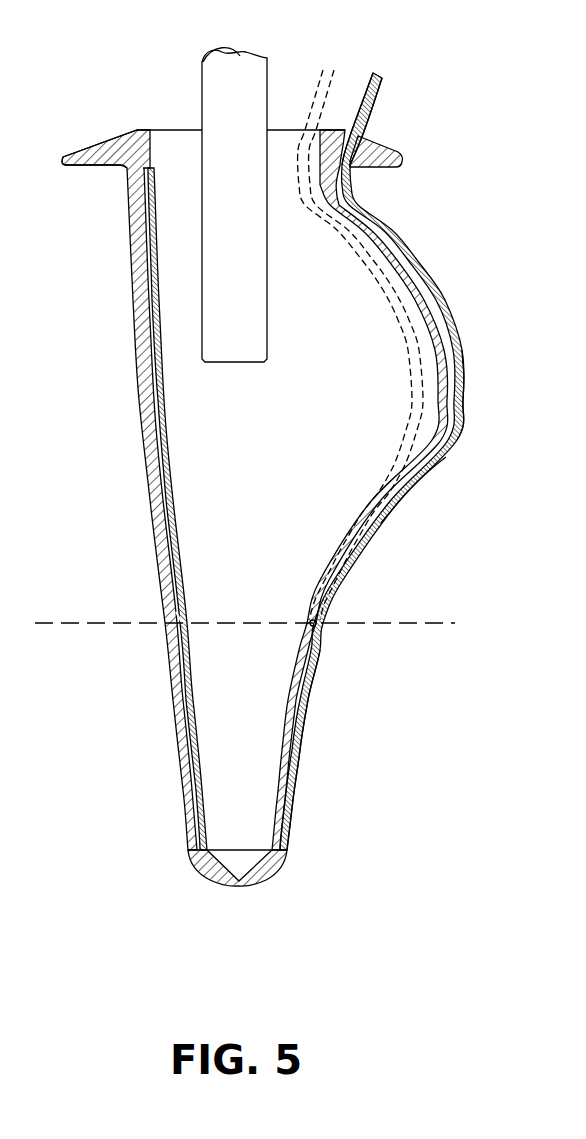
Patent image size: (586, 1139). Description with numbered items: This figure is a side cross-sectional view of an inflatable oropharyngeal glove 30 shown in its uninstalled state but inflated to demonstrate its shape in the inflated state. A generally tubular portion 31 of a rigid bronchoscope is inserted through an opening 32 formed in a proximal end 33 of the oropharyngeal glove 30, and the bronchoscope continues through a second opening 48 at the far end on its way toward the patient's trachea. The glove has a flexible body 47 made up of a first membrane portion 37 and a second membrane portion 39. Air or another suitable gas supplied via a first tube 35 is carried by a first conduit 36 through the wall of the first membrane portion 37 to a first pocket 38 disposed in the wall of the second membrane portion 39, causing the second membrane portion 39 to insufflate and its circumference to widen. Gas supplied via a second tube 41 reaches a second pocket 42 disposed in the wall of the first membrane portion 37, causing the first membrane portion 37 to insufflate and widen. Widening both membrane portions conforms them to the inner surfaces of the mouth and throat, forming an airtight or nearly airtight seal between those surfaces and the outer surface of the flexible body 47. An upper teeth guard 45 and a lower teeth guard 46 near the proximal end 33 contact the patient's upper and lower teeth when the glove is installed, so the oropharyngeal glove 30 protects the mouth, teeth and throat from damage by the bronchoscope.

The inflatable oropharyngeal glove 30 is at (303, 402).
The generally tubular portion 31 is at (248, 262).
The opening 32 is at (175, 130).
The proximal end 33 is at (330, 130).
The first tube 35 is at (315, 92).
The first conduit 36 is at (408, 407).
The first membrane portion 37 is at (413, 512).
The first pocket 38 is at (292, 697).
The second membrane portion 39 is at (288, 757).
The second tube 41 is at (373, 105).
The second pocket 42 is at (457, 407).
The upper teeth guard 45 is at (367, 170).
The lower teeth guard 46 is at (103, 167).
The flexible body 47 is at (442, 290).
The second opening 48 is at (245, 884).